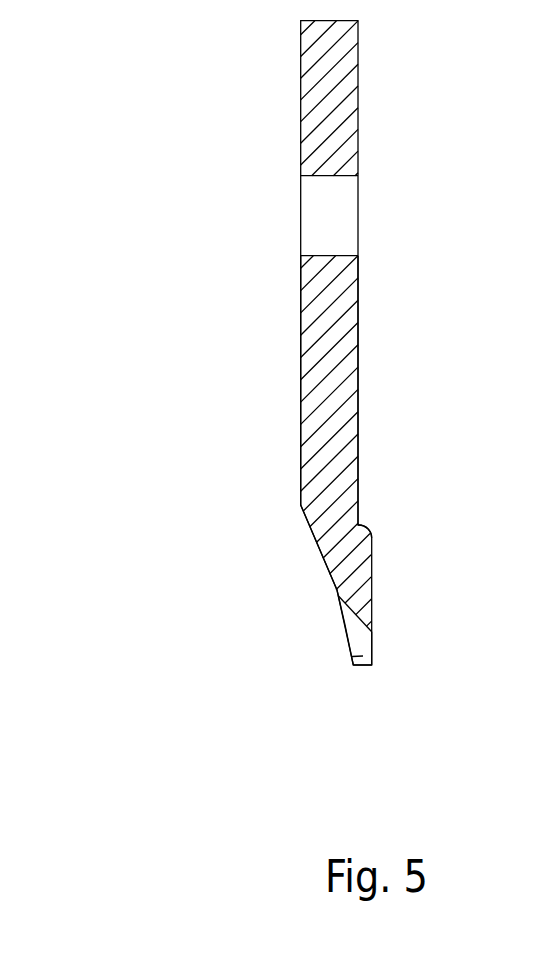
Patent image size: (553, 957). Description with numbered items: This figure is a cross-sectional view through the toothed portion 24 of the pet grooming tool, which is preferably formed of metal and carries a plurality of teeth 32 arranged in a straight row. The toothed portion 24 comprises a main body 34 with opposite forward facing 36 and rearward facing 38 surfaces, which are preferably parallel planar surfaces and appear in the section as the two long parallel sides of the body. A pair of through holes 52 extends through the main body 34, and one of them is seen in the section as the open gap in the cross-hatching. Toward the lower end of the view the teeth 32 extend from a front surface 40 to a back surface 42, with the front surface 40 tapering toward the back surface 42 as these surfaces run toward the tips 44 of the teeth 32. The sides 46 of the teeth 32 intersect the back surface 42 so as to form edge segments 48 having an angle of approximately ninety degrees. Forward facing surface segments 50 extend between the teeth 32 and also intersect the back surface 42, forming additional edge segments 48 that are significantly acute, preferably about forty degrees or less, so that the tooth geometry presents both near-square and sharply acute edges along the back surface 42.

The toothed portion 24 is at (170, 123).
The teeth 32 is at (352, 629).
The main body 34 is at (335, 288).
The forward facing surface 36 is at (300, 317).
The rearward facing surface 38 is at (360, 337).
The front surface 40 is at (316, 538).
The back surface 42 is at (373, 552).
The tips 44 is at (363, 667).
The sides 46 is at (352, 657).
The edge segments 48 is at (350, 653).
The forward facing surface segments 50 is at (345, 608).
The through holes 52 is at (297, 225).